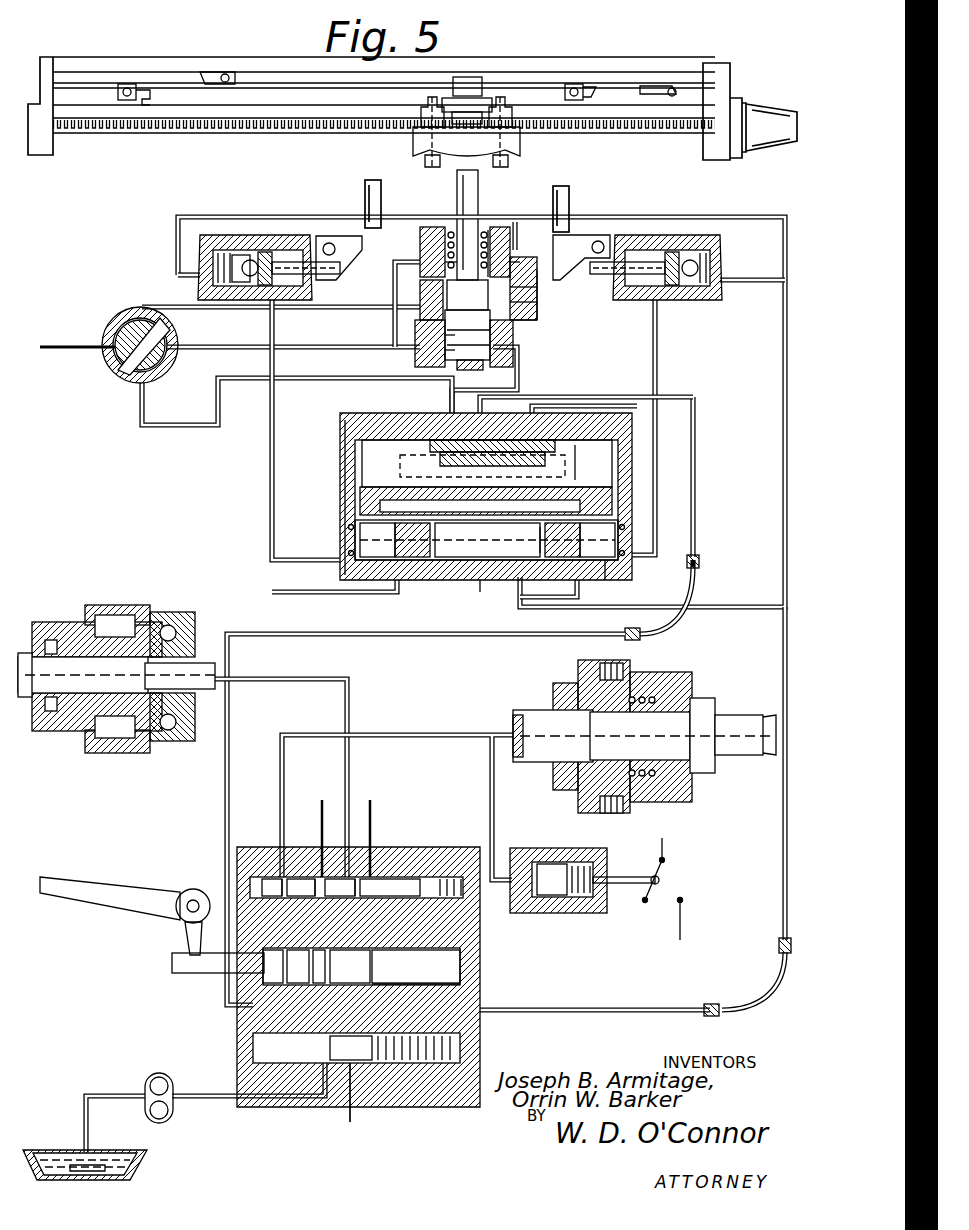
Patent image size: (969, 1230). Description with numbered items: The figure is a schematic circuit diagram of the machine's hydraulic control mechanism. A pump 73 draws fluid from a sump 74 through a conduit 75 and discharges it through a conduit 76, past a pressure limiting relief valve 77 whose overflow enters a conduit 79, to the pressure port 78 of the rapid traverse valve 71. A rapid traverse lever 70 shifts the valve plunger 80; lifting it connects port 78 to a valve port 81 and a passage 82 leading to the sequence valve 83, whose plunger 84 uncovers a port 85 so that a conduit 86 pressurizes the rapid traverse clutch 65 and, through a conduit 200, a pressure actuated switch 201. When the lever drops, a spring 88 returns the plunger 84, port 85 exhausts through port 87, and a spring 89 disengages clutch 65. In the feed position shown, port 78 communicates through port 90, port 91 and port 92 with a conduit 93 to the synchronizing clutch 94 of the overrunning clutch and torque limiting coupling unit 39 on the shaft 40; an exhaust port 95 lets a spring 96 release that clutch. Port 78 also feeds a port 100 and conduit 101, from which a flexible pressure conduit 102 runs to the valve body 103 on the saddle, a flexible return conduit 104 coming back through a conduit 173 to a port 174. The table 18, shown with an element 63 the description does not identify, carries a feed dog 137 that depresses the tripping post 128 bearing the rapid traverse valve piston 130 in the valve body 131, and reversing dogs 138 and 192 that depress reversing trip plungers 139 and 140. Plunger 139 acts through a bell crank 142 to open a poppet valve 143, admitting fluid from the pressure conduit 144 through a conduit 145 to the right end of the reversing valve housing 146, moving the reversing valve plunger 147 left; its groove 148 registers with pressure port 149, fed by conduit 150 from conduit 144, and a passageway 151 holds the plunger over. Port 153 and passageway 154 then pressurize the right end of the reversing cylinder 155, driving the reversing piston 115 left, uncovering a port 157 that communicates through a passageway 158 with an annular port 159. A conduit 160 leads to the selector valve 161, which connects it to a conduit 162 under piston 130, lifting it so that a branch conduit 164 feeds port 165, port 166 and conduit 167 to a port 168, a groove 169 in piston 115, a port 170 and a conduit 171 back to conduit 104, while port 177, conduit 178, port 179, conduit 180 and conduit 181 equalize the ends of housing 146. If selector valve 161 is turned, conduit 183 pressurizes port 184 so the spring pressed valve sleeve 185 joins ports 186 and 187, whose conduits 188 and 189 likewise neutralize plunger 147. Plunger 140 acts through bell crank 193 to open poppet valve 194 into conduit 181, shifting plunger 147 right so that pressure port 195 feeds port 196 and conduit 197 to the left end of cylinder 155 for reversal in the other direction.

The work supporting table 18 is at (136, 88).
The reversing dog 192 is at (162, 93).
The tripping post 128 is at (470, 80).
The feed dog 137 is at (585, 90).
The reversing dog 138 is at (672, 88).
The reversing plunger 140 is at (427, 103).
The reversing trip plunger 139 is at (507, 100).
The rack 63 is at (145, 138).
The poppet valve 194 is at (256, 262).
The bell crank 193 is at (352, 256).
The spring pressed valve sleeve 185 is at (448, 236).
The port 186 is at (448, 250).
The branch conduit 164 is at (517, 224).
The port 187 is at (505, 249).
The bell crank 142 is at (590, 240).
The poppet valve 143 is at (672, 260).
The port 184 is at (444, 268).
The conduit 189 is at (530, 265).
The conduit 188 is at (396, 280).
The port 165 is at (515, 287).
The port 166 is at (512, 300).
The conduit 167 is at (515, 321).
The conduit 178 is at (595, 345).
The selector valve 161 is at (107, 321).
The conduit 183 is at (216, 316).
The conduit 180 is at (380, 344).
The port 177 is at (463, 331).
The port 179 is at (463, 347).
The rapid traverse valve body 131 is at (500, 353).
The pressure conduit 144 is at (783, 330).
The conduit 145 is at (660, 362).
The rapid traverse valve piston 130 is at (470, 369).
The conduit 162 is at (232, 376).
The conduit 171 is at (616, 397).
The conduit 181 is at (275, 416).
The conduit 160 is at (494, 498).
The port 168 is at (455, 422).
The port 170 is at (505, 432).
The reversing cylinder 155 is at (630, 446).
The annular port 159 is at (408, 470).
The groove 169 is at (505, 462).
The reversing piston 115 is at (577, 455).
The port 157 is at (572, 488).
The conduit 197 is at (344, 506).
The passageway 154 is at (630, 498).
The port 196 is at (412, 538).
The passageway 158 is at (486, 524).
The groove 148 is at (543, 535).
The port 153 is at (562, 540).
The valve body 103 is at (632, 523).
The reversing valve housing 146 is at (690, 568).
The conduit 150 is at (660, 612).
The flexible return conduit 104 is at (700, 594).
The pressure port 195 is at (438, 580).
The pressure port 149 is at (535, 581).
The passageway 151 is at (607, 581).
The reversing valve plunger 147 is at (482, 594).
The overrunning clutch and torque limiting coupling unit 39 is at (115, 658).
The synchronizing clutch 94 is at (92, 608).
The shaft 40 is at (22, 655).
The conduit 93 is at (272, 676).
The spring 96 is at (60, 736).
The spring 89 is at (650, 700).
The rapid traverse clutch 65 is at (644, 725).
The conduit 86 is at (284, 748).
The conduit 173 is at (226, 777).
The conduit 200 is at (490, 768).
The sequence valve 83 is at (262, 870).
The port 85 is at (283, 866).
The plunger 84 is at (323, 860).
The port 87 is at (321, 870).
The port 92 is at (350, 866).
The exhaust port 95 is at (372, 866).
The spring 88 is at (455, 870).
The pressure actuated switch 201 is at (558, 848).
The rapid traverse lever 70 is at (70, 880).
The passage 82 is at (215, 890).
The valve plunger 80 is at (170, 963).
The valve port 81 is at (273, 966).
The port 174 is at (296, 983).
The port 90 is at (323, 950).
The pressure port 78 is at (356, 976).
The port 100 is at (396, 981).
The flexible pressure conduit 102 is at (770, 986).
The conduit 101 is at (485, 1003).
The rapid traverse valve 71 is at (315, 959).
The pump 73 is at (148, 1078).
The conduit 75 is at (80, 1094).
The sump 74 is at (40, 1150).
The conduit 76 is at (258, 1102).
The conduit 79 is at (346, 1108).
The pressure limiting relief valve 77 is at (380, 1090).
The port 91 is at (340, 887).